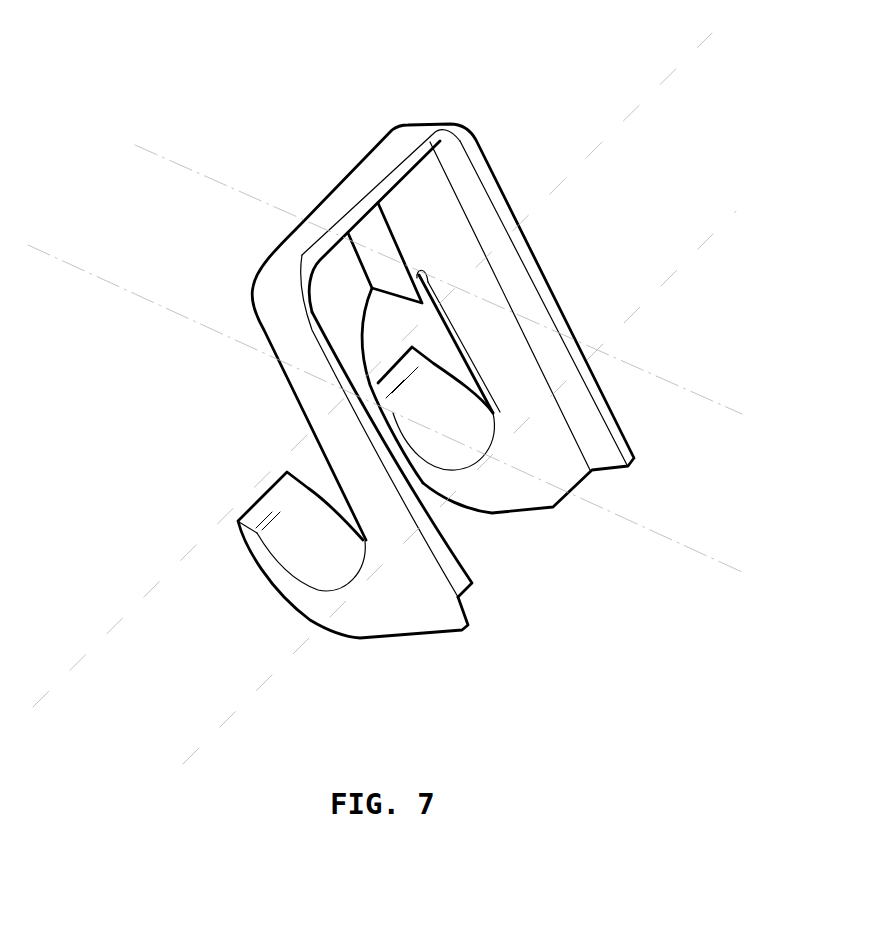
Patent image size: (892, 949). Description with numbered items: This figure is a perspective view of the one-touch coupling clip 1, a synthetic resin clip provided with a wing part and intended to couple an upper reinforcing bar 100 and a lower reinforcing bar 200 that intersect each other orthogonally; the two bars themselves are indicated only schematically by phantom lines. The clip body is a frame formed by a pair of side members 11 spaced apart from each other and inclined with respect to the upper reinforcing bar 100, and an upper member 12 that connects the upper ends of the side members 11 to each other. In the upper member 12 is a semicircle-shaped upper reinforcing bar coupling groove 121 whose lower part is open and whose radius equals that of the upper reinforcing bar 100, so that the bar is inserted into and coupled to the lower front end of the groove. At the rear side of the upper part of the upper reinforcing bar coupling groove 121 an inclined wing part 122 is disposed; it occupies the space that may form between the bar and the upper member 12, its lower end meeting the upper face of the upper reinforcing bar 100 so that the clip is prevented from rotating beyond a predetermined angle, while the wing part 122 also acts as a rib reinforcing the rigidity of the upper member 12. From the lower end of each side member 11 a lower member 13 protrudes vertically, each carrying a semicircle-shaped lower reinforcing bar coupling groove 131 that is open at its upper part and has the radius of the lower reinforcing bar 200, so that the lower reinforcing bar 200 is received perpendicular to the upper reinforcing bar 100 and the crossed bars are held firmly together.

The one-touch coupling clip 1 is at (414, 382).
The side members 11 is at (323, 450).
The upper member 12 is at (343, 193).
The upper reinforcing bar coupling groove 121 is at (372, 288).
The wing part 122 is at (386, 252).
The lower members 13 is at (283, 597).
The lower reinforcing bar coupling grooves 131 is at (332, 592).
The upper reinforcing bar 100 is at (127, 288).
The lower reinforcing bar 200 is at (105, 637).